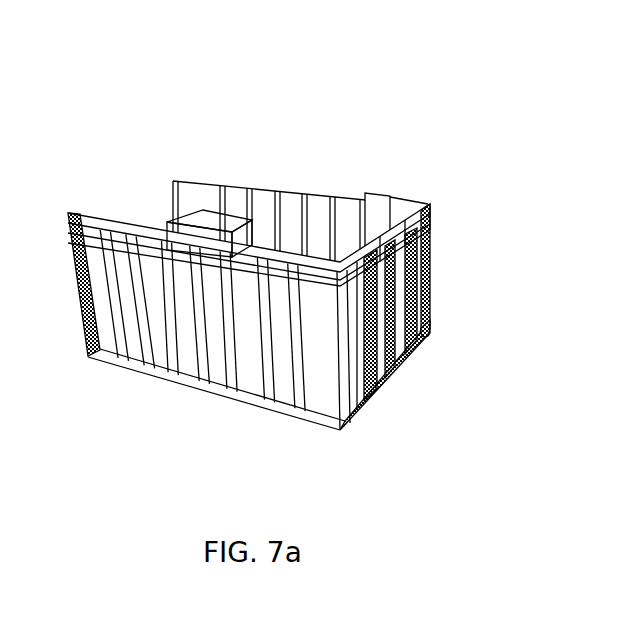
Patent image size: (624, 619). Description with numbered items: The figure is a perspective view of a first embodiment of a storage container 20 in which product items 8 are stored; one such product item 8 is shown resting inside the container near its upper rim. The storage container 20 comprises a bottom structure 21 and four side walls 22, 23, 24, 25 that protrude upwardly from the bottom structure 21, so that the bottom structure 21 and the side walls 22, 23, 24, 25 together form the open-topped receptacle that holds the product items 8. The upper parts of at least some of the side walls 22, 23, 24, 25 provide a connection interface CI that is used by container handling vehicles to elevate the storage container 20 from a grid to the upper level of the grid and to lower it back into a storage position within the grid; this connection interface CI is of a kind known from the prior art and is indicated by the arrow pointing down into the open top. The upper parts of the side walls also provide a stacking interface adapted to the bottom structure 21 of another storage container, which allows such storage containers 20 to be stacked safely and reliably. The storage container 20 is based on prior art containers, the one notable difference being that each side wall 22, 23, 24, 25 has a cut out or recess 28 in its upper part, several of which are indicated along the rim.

The product items 8 is at (166, 219).
The storage container 20 is at (116, 163).
The bottom structure 21 is at (340, 436).
The side wall 22 is at (222, 378).
The side wall 23 is at (403, 203).
The side wall 24 is at (100, 208).
The side wall 25 is at (397, 340).
The cut out or recess 28 is at (178, 187).
The connection interface CI is at (200, 155).